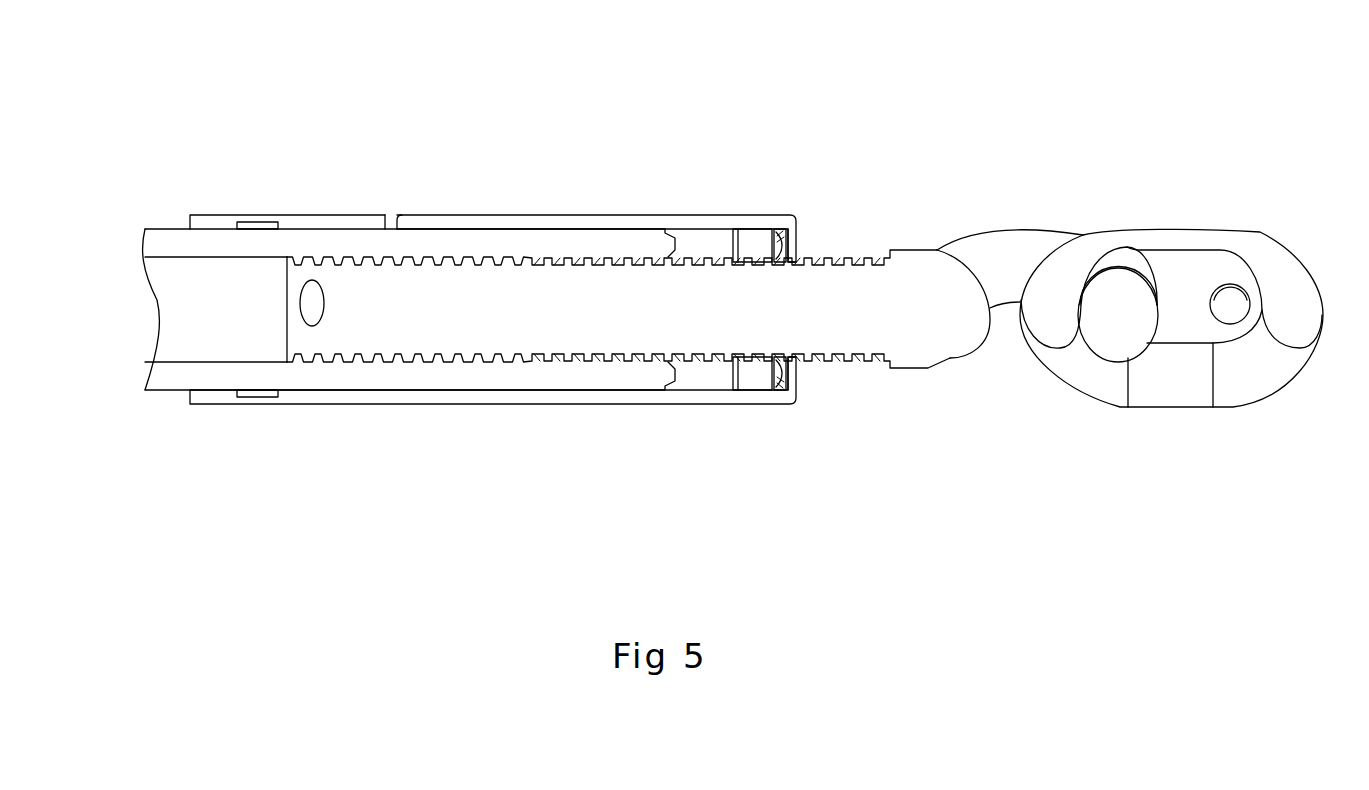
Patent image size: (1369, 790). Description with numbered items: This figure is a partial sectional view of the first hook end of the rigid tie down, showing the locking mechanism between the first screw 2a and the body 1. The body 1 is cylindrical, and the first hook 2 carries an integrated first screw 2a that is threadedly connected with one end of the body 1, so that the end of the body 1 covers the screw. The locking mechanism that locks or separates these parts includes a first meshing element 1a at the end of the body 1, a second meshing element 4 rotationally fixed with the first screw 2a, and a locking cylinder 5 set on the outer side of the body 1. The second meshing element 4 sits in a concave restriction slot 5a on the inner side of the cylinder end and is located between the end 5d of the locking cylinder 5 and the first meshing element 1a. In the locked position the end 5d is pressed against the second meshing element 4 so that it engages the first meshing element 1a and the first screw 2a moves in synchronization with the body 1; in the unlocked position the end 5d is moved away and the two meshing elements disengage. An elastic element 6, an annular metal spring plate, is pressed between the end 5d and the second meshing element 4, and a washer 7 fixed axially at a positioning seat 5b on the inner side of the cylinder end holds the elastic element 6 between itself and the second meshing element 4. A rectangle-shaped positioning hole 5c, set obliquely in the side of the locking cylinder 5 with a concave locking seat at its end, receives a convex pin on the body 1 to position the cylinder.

The body 1 is at (217, 245).
The first meshing element 1a is at (762, 237).
The first hook 2 is at (1060, 365).
The first screw 2a is at (560, 305).
The second meshing element 4 is at (757, 229).
The locking cylinder 5 is at (318, 222).
The restriction slot 5a is at (757, 393).
The positioning seat 5b is at (797, 228).
The positioning hole 5c is at (393, 218).
The end of the locking cylinder 5d is at (797, 394).
The elastic element 6 is at (777, 390).
The washer 7 is at (784, 240).